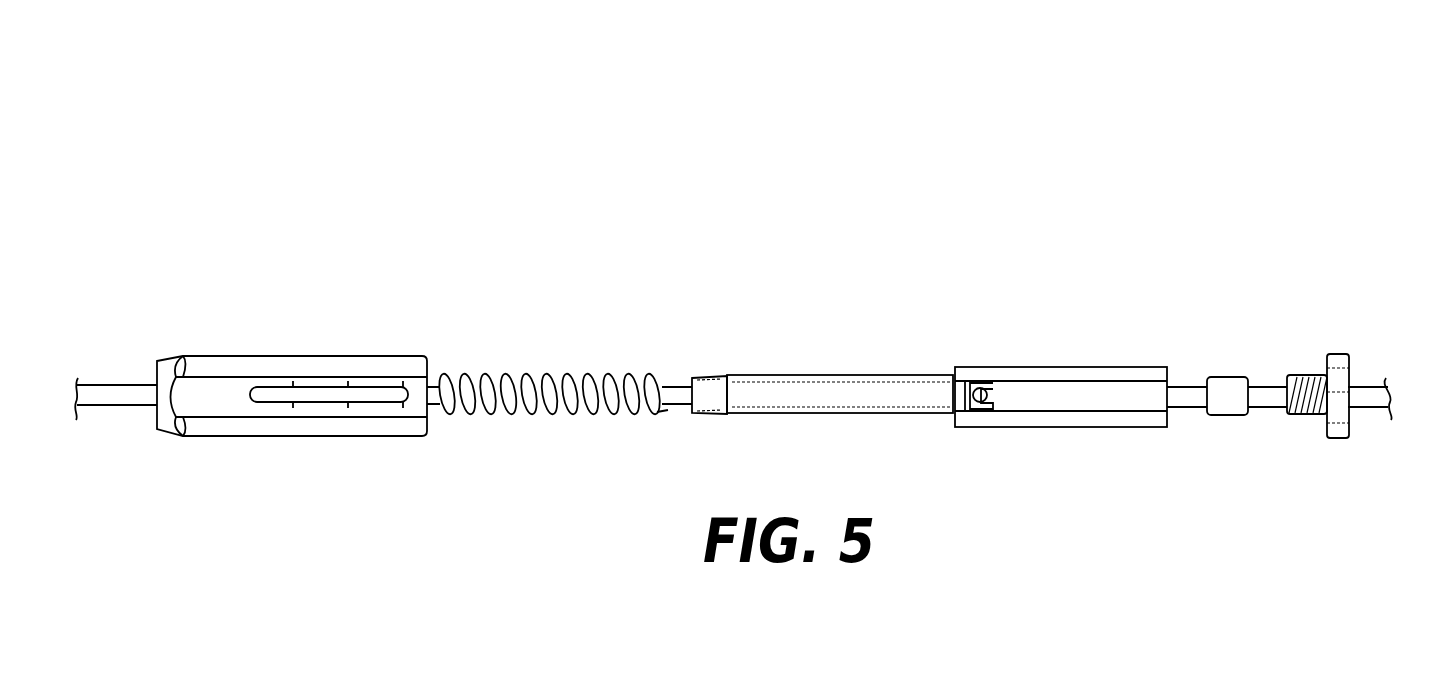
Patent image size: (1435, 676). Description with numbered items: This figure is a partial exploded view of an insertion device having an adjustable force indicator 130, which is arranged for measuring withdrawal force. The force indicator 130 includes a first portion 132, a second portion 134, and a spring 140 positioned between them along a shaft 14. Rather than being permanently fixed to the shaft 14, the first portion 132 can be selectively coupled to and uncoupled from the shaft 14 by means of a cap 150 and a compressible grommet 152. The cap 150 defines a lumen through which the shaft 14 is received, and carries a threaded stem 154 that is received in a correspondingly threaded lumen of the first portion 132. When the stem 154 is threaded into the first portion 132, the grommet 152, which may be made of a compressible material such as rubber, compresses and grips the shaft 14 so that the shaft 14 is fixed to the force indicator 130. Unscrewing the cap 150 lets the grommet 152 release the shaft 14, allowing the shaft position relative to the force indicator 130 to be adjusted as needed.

The force indicator 130 is at (786, 126).
The first portion 132 is at (903, 277).
The second portion 134 is at (376, 274).
The spring 140 is at (550, 373).
The shaft 14 is at (1272, 385).
The compressible grommet 152 is at (1229, 377).
The threaded stem 154 is at (1312, 374).
The cap 150 is at (1338, 353).